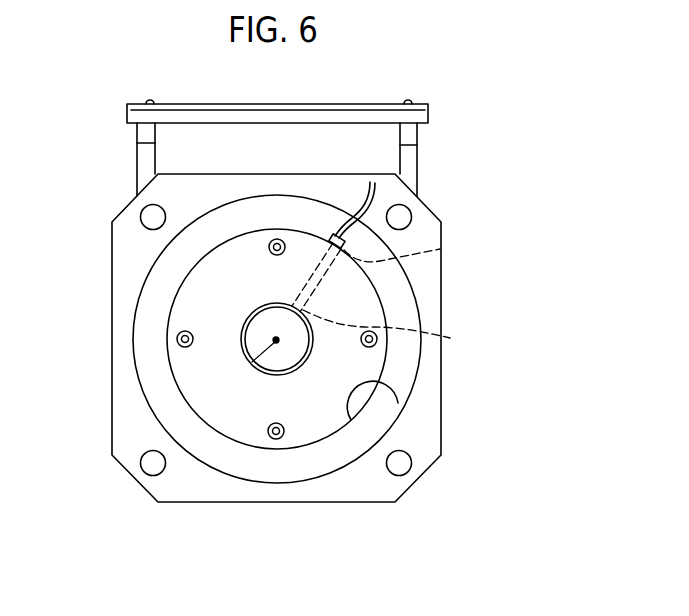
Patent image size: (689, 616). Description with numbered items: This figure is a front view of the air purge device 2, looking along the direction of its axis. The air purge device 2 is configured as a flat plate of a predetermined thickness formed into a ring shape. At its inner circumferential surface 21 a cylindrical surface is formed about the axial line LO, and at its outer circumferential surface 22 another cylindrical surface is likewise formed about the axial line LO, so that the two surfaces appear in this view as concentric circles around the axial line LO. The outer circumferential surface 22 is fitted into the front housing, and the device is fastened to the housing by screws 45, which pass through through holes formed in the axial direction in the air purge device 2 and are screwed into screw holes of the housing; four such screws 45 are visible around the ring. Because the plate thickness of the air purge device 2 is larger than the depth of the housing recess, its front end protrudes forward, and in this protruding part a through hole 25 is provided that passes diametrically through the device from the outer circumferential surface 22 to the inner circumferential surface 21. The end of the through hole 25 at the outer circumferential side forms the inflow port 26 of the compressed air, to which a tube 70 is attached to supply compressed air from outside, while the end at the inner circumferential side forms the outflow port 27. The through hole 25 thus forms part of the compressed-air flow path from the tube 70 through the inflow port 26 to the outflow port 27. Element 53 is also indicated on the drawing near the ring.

The air purge device 2 is at (313, 445).
The inner circumferential surface 21 is at (309, 348).
The outer circumferential surface 22 is at (386, 367).
The through hole 25 is at (306, 278).
The inflow port 26 is at (440, 249).
The outflow port 27 is at (450, 338).
The screws 45 is at (270, 246).
The notch 53 is at (398, 403).
The tube 70 is at (372, 236).
The axial line LO is at (252, 362).